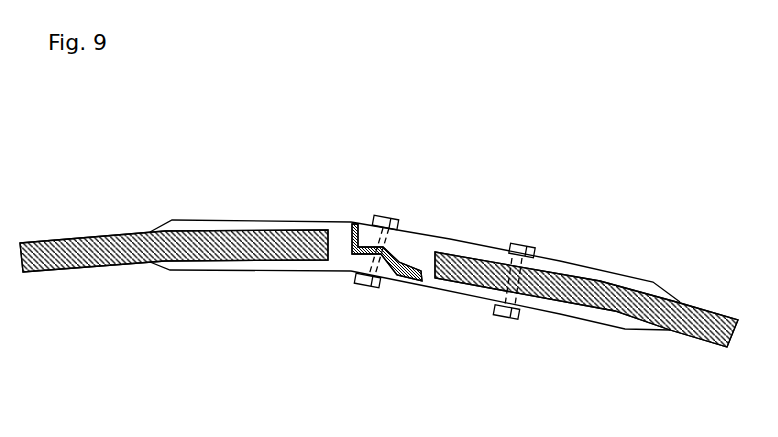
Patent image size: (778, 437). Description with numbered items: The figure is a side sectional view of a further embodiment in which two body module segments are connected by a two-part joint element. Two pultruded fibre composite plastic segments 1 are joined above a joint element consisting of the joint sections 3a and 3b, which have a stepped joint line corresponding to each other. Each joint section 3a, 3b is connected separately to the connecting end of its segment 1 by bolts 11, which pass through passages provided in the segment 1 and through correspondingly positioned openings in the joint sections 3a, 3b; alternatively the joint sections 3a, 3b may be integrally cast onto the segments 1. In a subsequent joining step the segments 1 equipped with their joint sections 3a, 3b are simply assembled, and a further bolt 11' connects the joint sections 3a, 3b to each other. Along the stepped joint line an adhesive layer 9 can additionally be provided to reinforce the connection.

The pultruded fibre composite plastic segment 1 is at (97, 262).
The joint section 3a is at (205, 267).
The joint section 3b is at (535, 302).
The adhesive layer 9 is at (398, 274).
The bolt 11 is at (529, 238).
The further bolt 11' is at (391, 215).